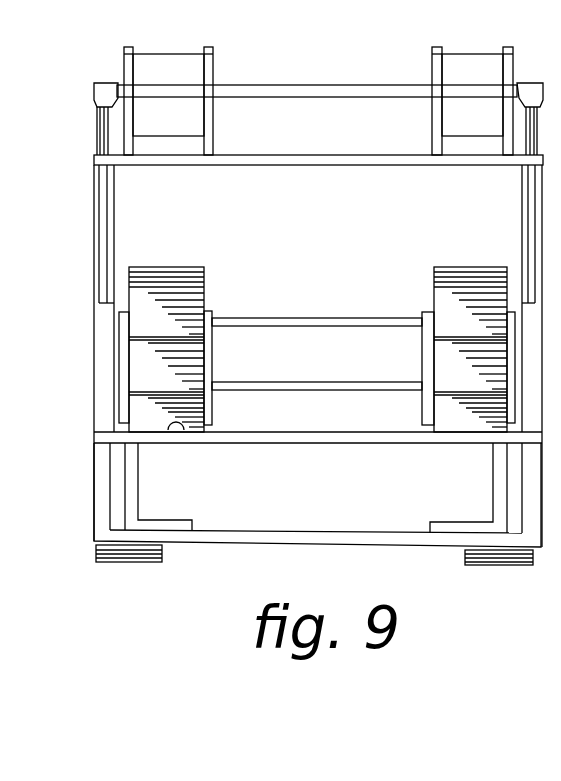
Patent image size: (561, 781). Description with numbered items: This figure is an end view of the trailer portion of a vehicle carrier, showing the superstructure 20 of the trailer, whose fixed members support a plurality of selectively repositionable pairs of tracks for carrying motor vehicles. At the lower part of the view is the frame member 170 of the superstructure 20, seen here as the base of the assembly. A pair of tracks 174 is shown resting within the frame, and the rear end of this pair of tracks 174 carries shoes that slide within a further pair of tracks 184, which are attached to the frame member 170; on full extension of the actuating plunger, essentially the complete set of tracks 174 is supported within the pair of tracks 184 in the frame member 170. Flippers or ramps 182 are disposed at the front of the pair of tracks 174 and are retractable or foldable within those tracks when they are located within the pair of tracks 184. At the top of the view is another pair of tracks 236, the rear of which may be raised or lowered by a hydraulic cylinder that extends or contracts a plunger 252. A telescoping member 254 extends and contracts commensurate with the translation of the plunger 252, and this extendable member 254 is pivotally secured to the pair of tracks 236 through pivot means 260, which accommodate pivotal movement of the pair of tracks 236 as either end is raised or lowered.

The superstructure 20 is at (88, 253).
The frame member 170 is at (90, 443).
The pair of tracks 174 is at (185, 366).
The flippers or ramps 182 is at (195, 283).
The further pair of tracks 184 is at (176, 427).
The pair of tracks 236 is at (190, 73).
The plunger 252 is at (97, 143).
The telescoping member 254 is at (97, 120).
The pivot means 260 is at (93, 86).